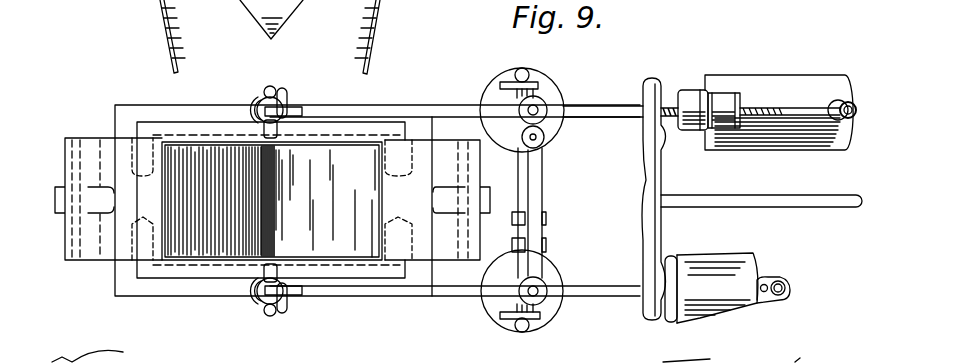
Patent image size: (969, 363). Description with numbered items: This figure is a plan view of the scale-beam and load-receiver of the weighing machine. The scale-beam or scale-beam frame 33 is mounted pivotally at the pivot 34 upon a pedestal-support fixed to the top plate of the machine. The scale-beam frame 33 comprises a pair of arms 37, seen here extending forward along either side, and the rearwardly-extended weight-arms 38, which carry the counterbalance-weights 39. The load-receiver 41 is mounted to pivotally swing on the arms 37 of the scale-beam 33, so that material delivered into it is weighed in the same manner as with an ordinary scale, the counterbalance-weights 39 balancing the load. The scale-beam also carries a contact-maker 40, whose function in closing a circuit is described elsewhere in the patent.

The scale-beam frame 33 is at (603, 100).
The pivot 34 is at (538, 108).
The arms 37 is at (381, 111).
The weight-arms 38 is at (826, 30).
The counterbalance-weights 39 is at (779, 112).
The contact-maker 40 is at (783, 282).
The load-receiver 41 is at (325, 178).